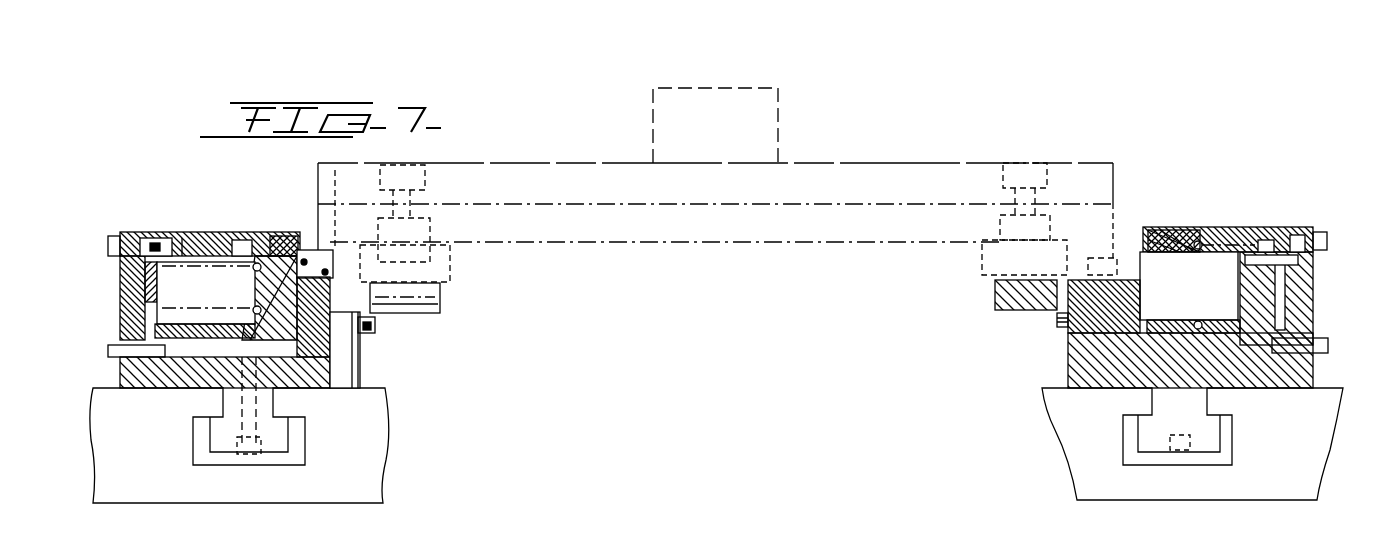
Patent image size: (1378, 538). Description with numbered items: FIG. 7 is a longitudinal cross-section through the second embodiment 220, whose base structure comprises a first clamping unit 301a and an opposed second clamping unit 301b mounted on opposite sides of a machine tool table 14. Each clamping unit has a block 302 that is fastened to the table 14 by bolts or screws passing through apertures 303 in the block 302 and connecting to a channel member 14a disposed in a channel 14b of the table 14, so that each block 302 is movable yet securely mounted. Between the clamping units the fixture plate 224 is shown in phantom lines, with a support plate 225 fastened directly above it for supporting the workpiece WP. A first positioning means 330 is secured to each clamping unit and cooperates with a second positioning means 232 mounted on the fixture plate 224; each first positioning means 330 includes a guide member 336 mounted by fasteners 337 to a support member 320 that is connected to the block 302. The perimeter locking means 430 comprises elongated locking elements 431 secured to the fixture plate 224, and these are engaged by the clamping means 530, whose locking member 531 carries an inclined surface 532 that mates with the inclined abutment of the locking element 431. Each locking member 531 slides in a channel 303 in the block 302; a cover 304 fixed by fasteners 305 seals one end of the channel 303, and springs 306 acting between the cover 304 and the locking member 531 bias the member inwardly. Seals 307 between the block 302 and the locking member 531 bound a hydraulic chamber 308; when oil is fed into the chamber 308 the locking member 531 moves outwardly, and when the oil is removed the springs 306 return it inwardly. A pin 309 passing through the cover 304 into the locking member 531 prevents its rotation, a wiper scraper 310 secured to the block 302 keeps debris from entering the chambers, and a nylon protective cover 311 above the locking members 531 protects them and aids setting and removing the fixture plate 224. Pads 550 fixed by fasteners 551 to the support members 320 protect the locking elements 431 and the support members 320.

The machine tool table 14 is at (380, 457).
The channel member 14a is at (290, 448).
The channel 14b is at (283, 460).
The second embodiment 220 is at (905, 112).
The fixture plate 224 is at (748, 232).
The support plate 225 is at (800, 162).
The second positioning means 232 is at (458, 251).
The first clamping unit 301a is at (123, 170).
The second clamping unit 301b is at (1247, 140).
The block 302 is at (145, 390).
The channel 303 is at (122, 310).
The cover 304 is at (130, 283).
The fasteners 305 is at (113, 237).
The springs 306 is at (130, 302).
The seals 307 is at (217, 243).
The hydraulic chamber 308 is at (273, 373).
The pin 309 is at (155, 243).
The wiper scraper 310 is at (357, 367).
The nylon protective cover 311 is at (280, 248).
The support member 320 is at (340, 343).
The first positioning means 330 is at (455, 293).
The guide member 336 is at (430, 306).
The fasteners 337 is at (374, 330).
The perimeter locking means 430 is at (323, 278).
The elongated locking element 431 is at (340, 262).
The clamping means 530 is at (300, 252).
The locking member 531 is at (182, 247).
The inclined surface 532 is at (325, 260).
The pads 550 is at (305, 270).
The fasteners 551 is at (333, 352).
The workpiece WP is at (778, 112).